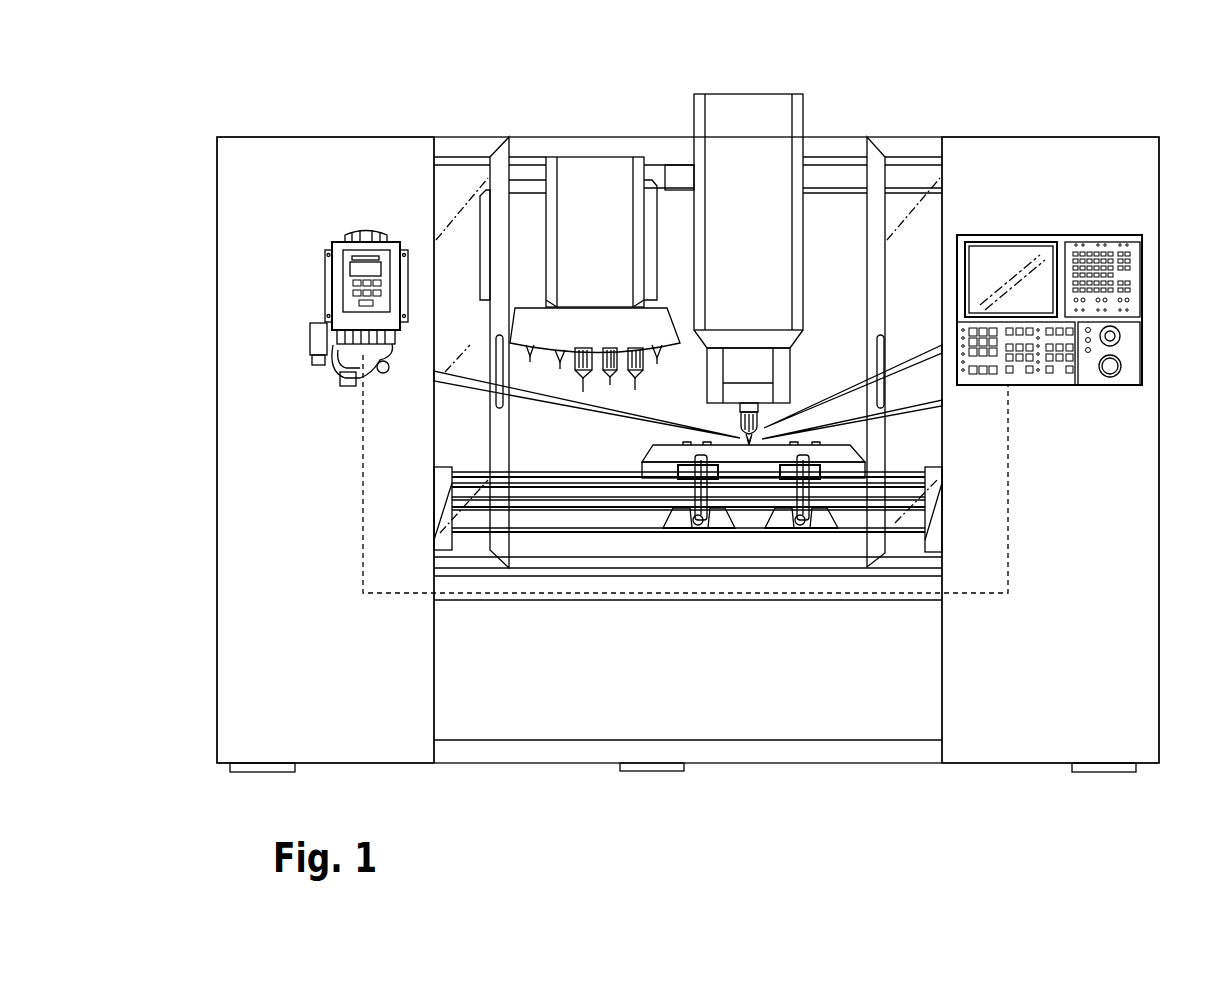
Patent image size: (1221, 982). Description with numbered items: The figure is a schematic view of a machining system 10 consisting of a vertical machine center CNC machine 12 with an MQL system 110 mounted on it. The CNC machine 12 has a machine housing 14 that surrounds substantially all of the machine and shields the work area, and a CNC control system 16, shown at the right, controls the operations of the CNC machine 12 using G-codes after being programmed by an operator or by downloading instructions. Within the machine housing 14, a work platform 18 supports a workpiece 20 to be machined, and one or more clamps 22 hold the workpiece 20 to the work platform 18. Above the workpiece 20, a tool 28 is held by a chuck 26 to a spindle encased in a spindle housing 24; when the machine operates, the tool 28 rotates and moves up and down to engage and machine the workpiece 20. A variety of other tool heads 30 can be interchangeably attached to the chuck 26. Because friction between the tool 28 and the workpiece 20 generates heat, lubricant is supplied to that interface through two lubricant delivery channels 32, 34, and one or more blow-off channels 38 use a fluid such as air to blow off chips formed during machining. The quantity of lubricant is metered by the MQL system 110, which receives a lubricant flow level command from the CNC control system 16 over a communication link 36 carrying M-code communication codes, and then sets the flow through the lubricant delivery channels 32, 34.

The machining system 10 is at (416, 68).
The CNC machine 12 is at (245, 132).
The machine housing 14 is at (216, 240).
The CNC control system 16 is at (1070, 230).
The work platform 18 is at (578, 563).
The workpiece 20 is at (673, 457).
The clamps 22 is at (704, 512).
The spindle housing 24 is at (722, 167).
The chuck 26 is at (743, 444).
The tool 28 is at (752, 447).
The tool heads 30 is at (738, 439).
The lubricant delivery channel 32 is at (838, 425).
The lubricant delivery channel 34 is at (566, 367).
The communication link 36 is at (362, 502).
The blow-off channel 38 is at (838, 393).
The MQL system 110 is at (362, 226).